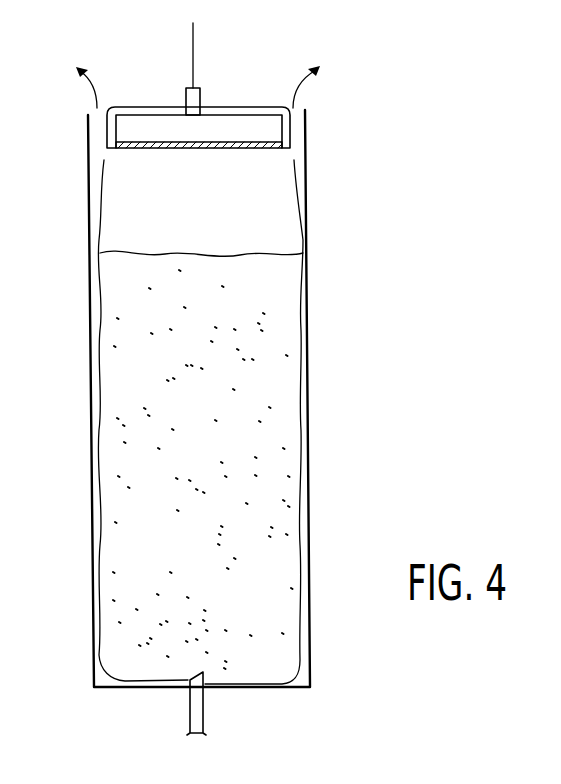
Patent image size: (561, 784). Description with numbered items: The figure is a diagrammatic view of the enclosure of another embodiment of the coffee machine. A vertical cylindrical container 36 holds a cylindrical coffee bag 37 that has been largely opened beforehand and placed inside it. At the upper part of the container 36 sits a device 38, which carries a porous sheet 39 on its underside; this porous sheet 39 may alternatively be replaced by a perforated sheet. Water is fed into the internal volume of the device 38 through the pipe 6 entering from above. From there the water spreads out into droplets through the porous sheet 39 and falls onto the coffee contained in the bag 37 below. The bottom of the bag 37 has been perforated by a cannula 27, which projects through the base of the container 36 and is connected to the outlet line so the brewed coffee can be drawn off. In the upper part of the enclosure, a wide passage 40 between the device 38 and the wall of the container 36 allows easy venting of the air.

The pipe 6 is at (193, 47).
The cannula 27 is at (203, 708).
The vertical cylindrical container 36 is at (305, 202).
The cylindrical coffee bag 37 is at (298, 362).
The device 38 is at (233, 107).
The porous sheet 39 is at (153, 148).
The wide passage 40 is at (298, 130).